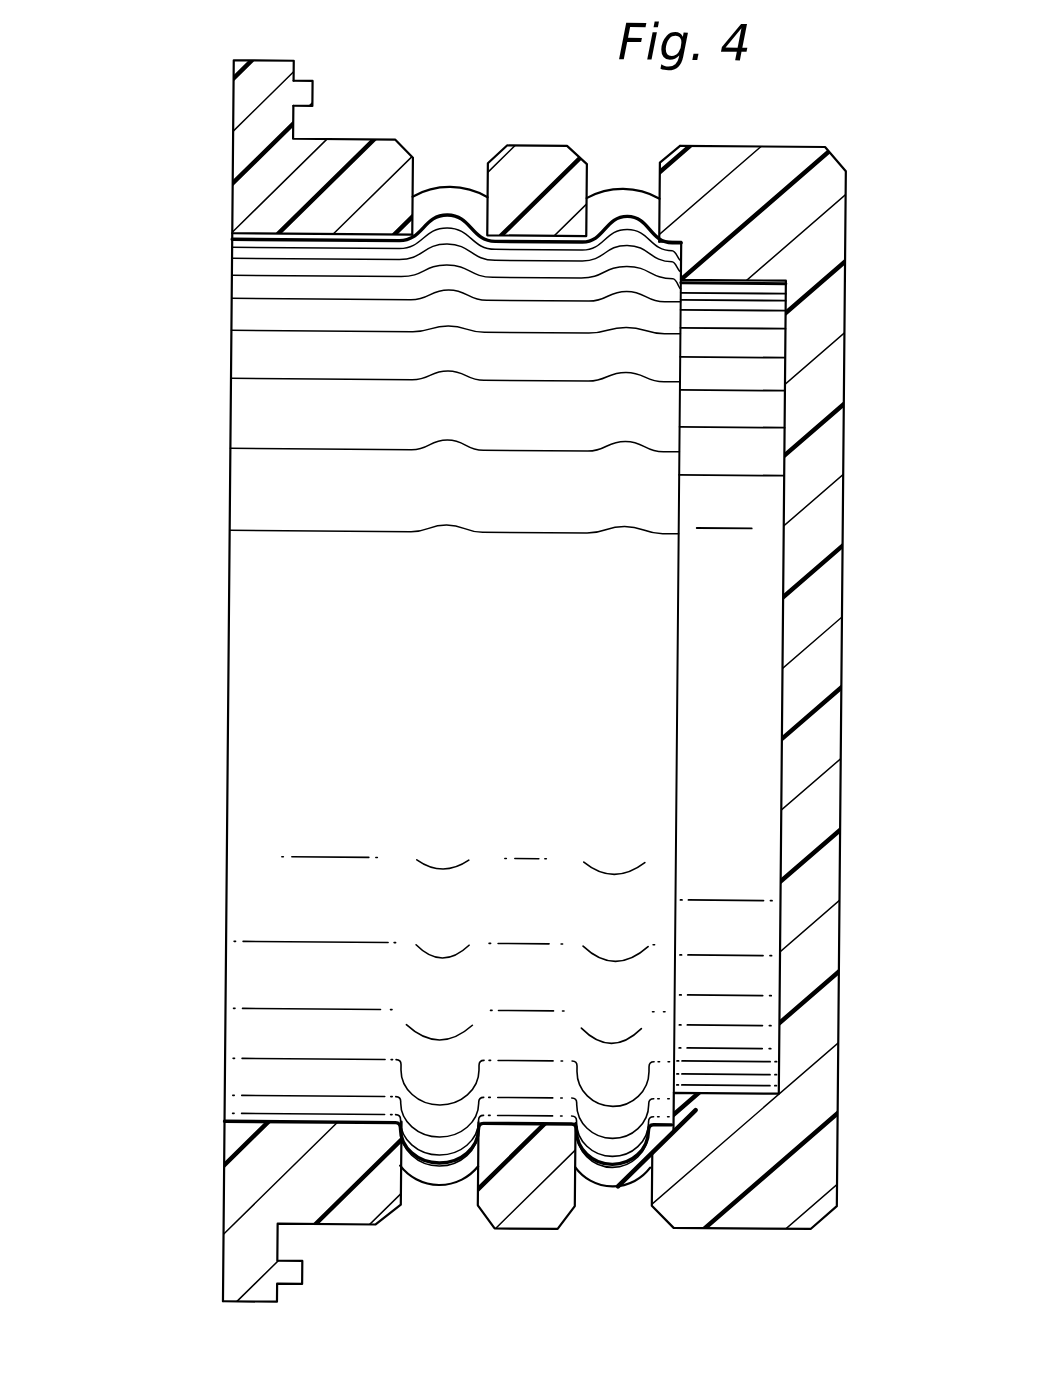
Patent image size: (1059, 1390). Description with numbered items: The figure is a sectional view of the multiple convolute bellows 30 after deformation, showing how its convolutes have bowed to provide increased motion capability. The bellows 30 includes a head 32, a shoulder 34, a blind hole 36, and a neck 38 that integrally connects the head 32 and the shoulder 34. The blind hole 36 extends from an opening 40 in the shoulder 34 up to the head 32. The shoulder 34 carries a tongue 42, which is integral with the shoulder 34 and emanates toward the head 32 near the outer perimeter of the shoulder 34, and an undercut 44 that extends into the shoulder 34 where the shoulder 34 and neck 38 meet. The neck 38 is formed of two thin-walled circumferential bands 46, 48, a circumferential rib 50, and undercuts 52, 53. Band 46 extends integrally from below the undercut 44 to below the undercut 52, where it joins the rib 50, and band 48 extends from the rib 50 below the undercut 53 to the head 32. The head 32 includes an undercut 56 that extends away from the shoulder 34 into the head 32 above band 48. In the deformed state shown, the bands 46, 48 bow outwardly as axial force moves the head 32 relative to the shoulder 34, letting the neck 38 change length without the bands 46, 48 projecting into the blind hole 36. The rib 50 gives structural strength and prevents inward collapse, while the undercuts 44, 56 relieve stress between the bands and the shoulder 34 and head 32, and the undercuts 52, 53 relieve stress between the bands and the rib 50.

The multiple convolute bellows 30 is at (162, 105).
The head 32 is at (858, 209).
The shoulder 34 is at (224, 157).
The blind hole 36 is at (256, 350).
The neck 38 is at (521, 262).
The opening 40 is at (233, 242).
The tongue 42 is at (297, 90).
The undercut 44 is at (417, 197).
The thin-walled circumferential band 46 is at (460, 202).
The thin-walled circumferential band 48 is at (606, 197).
The circumferential rib 50 is at (547, 215).
The undercut 52 is at (480, 195).
The undercut 53 is at (613, 192).
The undercut 56 is at (655, 198).